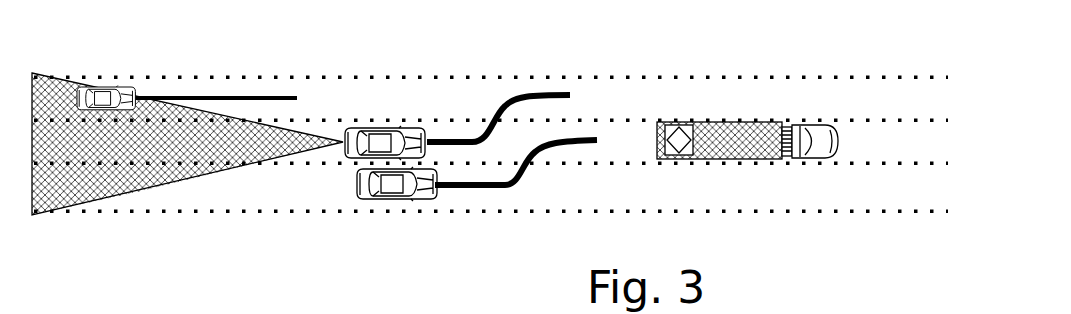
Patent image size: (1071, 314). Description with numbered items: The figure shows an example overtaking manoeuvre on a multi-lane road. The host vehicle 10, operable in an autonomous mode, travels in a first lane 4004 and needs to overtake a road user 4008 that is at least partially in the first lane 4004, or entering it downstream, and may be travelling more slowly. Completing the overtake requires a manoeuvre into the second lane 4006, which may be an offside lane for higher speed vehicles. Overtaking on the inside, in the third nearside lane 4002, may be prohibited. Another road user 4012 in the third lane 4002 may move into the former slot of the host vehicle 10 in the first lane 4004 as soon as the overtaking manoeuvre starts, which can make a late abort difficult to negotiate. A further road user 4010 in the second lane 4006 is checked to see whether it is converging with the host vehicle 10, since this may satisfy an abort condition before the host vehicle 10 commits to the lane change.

The host vehicle 10 is at (342, 143).
The third nearside lane 4002 is at (130, 204).
The first lane 4004 is at (225, 150).
The second lane 4006 is at (355, 108).
The road user 4008 is at (773, 160).
The road user in the second lane 4010 is at (122, 88).
The road user in the third lane 4012 is at (427, 202).